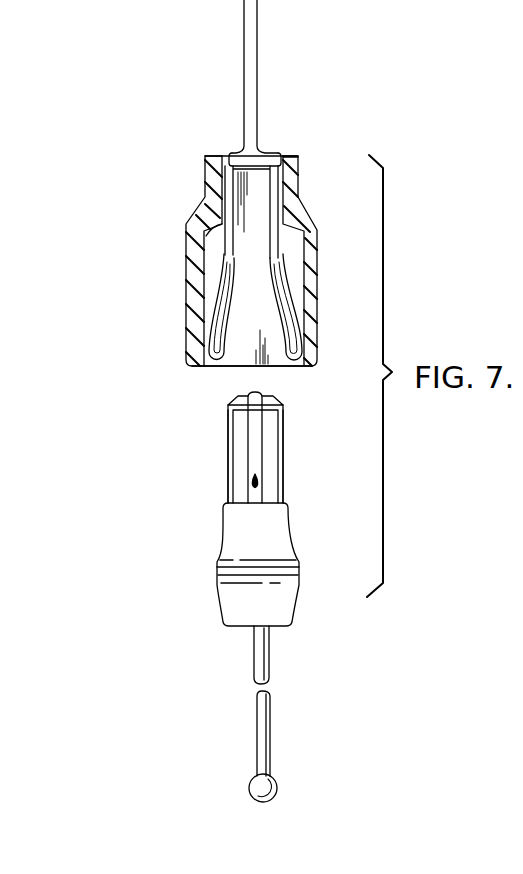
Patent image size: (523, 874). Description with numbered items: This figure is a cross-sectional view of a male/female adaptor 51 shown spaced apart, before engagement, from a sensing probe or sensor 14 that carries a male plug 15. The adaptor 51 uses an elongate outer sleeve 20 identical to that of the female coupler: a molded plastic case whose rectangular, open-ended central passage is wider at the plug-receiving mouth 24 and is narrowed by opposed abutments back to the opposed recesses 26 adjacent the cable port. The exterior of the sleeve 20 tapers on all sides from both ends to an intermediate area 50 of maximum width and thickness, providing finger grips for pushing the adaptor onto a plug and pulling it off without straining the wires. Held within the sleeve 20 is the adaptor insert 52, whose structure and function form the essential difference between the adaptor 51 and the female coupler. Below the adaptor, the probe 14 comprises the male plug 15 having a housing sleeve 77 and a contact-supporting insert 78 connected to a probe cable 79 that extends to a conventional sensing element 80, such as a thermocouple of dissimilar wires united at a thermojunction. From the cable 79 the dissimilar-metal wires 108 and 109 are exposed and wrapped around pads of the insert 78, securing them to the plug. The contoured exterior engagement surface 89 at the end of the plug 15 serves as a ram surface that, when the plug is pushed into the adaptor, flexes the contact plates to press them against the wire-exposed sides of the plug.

The sensor 14 is at (224, 696).
The male plug 15 is at (178, 520).
The elongate outer sleeve 20 is at (190, 335).
The mouth 24 is at (220, 367).
The opposed recesses 26 is at (283, 157).
The intermediate area 50 is at (200, 240).
The male/female adaptor 51 is at (148, 275).
The adaptor insert 52 is at (228, 185).
The housing sleeve 77 is at (243, 595).
The contact-supporting insert 78 is at (270, 437).
The probe cable 79 is at (254, 655).
The sensing element 80 is at (252, 782).
The contoured exterior engagement surface 89 is at (255, 395).
The wire 108 is at (285, 470).
The wire 109 is at (228, 463).